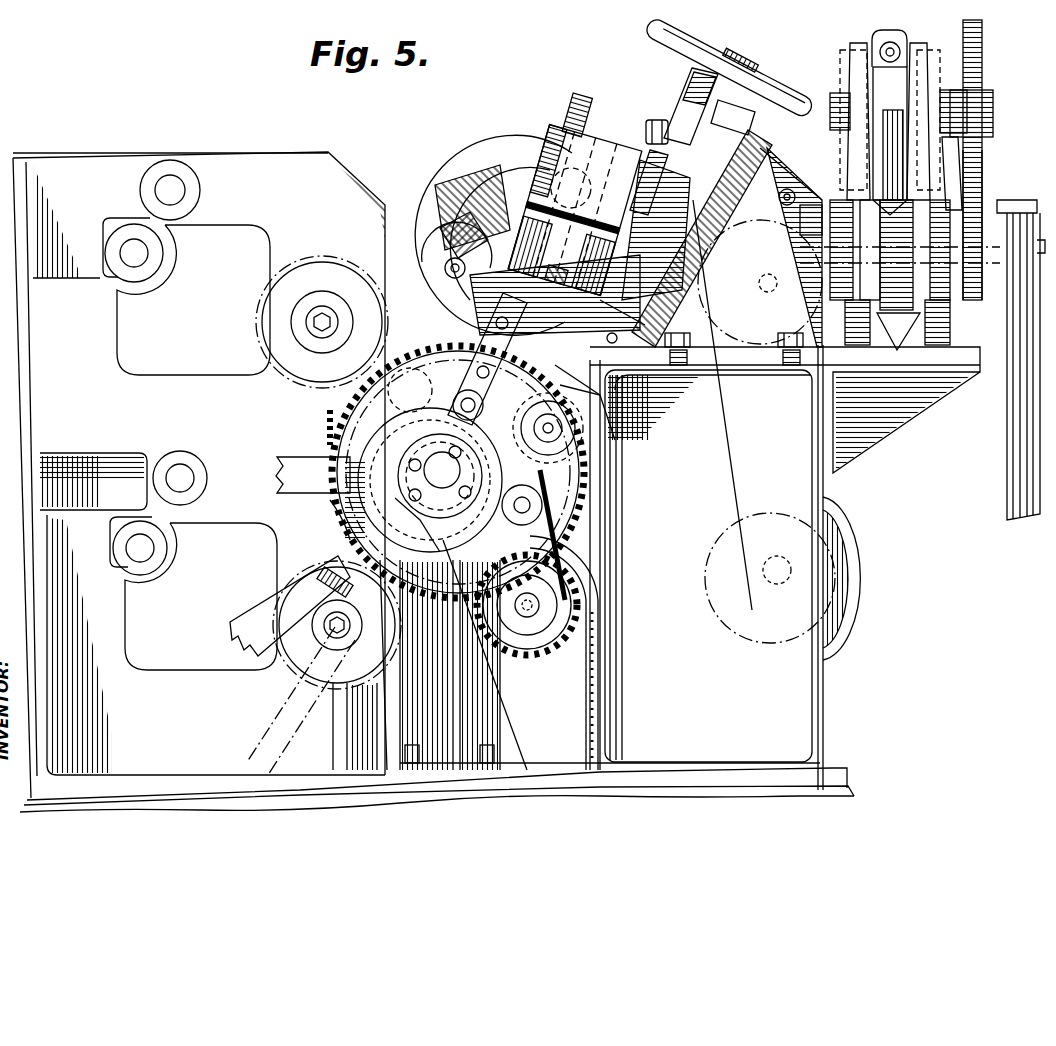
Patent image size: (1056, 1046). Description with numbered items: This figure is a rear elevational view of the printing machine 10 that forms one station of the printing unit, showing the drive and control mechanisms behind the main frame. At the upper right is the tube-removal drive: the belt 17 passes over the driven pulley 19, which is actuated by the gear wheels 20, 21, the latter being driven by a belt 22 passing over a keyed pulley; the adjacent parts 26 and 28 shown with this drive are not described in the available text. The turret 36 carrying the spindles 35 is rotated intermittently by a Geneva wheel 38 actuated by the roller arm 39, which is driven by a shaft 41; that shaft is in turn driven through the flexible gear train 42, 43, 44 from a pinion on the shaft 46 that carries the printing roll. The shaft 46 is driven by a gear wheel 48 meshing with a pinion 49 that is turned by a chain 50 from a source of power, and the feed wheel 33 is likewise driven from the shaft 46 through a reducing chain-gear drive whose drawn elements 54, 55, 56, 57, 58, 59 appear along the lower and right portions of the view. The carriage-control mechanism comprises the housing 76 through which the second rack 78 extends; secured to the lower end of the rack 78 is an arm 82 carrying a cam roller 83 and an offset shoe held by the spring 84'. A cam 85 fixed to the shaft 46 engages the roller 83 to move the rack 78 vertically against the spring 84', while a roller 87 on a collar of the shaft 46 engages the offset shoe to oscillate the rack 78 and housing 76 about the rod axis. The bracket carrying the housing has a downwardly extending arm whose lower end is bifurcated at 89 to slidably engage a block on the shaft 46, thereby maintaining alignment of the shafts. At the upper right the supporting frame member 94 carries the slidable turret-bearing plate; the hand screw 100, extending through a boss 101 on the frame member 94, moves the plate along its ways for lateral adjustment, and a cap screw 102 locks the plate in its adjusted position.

The printing machine 10 is at (748, 684).
The belt 17 is at (877, 72).
The driven pulley 19 is at (877, 84).
The gear wheel 20 is at (966, 22).
The gear wheel 21 is at (984, 180).
The belt 22 is at (1008, 412).
The yoke 26 is at (897, 26).
The pointer 28 is at (898, 275).
The feed wheel 33 is at (812, 186).
The spindles 35 is at (447, 266).
The turret 36 is at (515, 142).
The Geneva wheel 38 is at (448, 228).
The roller arm 39 is at (465, 363).
The shaft 41 is at (590, 383).
The gear 42 is at (610, 335).
The gear 43 is at (590, 444).
The gear 44 is at (556, 500).
The shaft 46 is at (430, 480).
The gear wheel 48 is at (545, 520).
The pinion 49 is at (545, 583).
The chain 50 is at (600, 676).
The reducing chain-gear drive element 54 is at (573, 549).
The reducing chain-gear drive element 55 is at (858, 576).
The reducing chain-gear drive element 56 is at (862, 556).
The reducing chain-gear drive element 57 is at (797, 546).
The reducing chain-gear drive element 58 is at (740, 446).
The reducing chain-gear drive element 59 is at (745, 218).
The housing 76 is at (600, 142).
The second rack 78 is at (583, 104).
The arm 82 is at (460, 330).
The cam roller 83 is at (400, 408).
The spring 84' is at (315, 665).
The cam 85 is at (330, 424).
The roller 87 is at (430, 515).
The bifurcations 89 is at (365, 490).
The supporting frame member 94 is at (702, 238).
The hand screw 100 is at (712, 36).
The boss 101 is at (702, 90).
The cap screw 102 is at (674, 108).